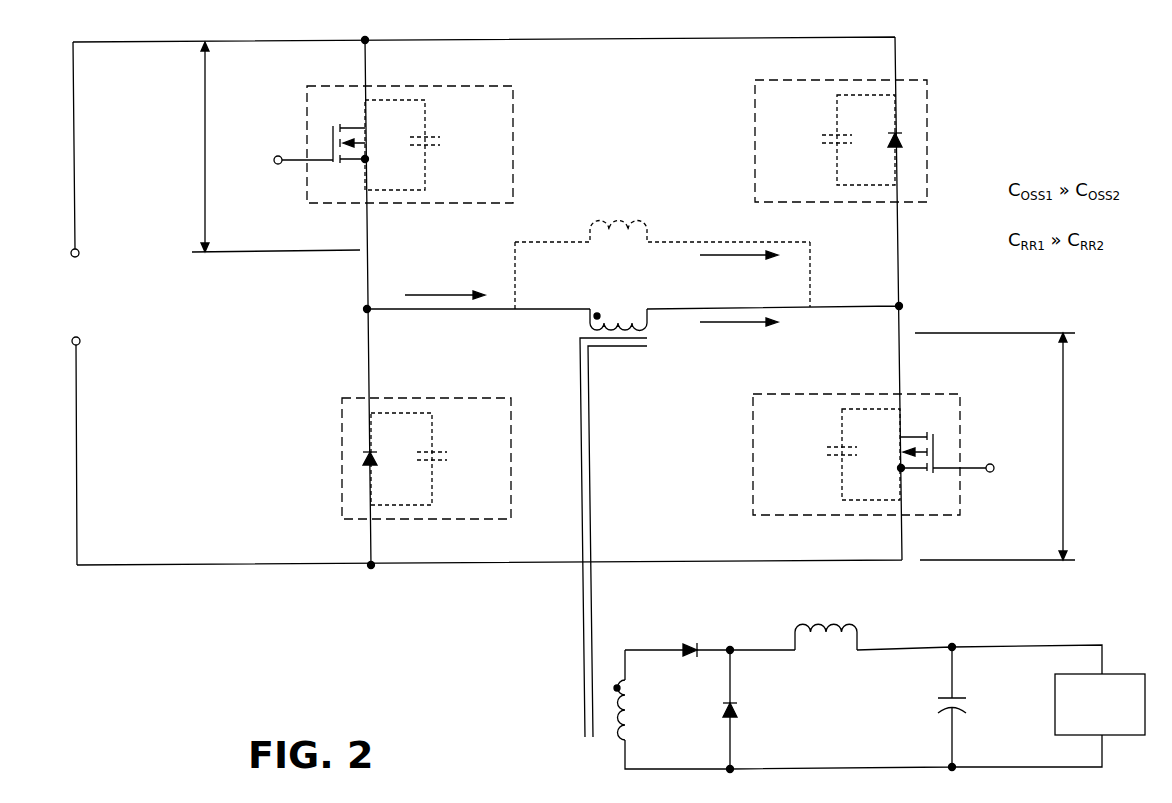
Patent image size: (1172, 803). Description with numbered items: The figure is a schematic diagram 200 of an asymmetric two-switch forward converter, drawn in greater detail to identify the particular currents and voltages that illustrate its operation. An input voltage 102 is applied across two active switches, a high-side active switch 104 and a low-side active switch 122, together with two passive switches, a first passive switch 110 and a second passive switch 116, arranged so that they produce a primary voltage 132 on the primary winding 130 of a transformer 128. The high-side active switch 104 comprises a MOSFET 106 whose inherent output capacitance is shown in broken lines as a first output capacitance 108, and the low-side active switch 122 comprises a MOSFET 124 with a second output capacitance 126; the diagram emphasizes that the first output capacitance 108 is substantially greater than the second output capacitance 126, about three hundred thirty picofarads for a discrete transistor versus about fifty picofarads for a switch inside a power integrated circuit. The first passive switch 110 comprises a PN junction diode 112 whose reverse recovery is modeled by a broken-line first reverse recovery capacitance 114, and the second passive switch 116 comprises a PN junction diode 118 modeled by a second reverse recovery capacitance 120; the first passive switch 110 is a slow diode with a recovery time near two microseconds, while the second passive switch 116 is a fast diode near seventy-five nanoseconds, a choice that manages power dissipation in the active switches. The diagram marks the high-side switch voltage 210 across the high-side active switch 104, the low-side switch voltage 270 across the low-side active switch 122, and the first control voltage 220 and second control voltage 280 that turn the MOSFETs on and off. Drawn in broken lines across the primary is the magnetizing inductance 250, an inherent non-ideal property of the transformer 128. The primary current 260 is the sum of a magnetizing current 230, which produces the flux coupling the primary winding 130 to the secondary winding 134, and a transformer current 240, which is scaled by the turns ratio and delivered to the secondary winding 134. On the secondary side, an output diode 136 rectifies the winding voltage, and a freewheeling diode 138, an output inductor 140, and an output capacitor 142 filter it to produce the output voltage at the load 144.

The input voltage V_IN 102 is at (92, 282).
The active switch Q1 104 is at (312, 86).
The MOSFET 106 is at (346, 120).
The output capacitance C_OSS1 108 is at (432, 118).
The passive switch D1 110 is at (923, 74).
The PN junction diode 112 is at (882, 150).
The reverse recovery capacitance C_RR1 114 is at (836, 122).
The passive switch D2 116 is at (340, 396).
The PN junction diode 118 is at (380, 460).
The reverse recovery capacitance C_RR2 120 is at (440, 436).
The active switch Q2 122 is at (956, 384).
The MOSFET 124 is at (930, 432).
The output capacitance C_OSS2 126 is at (832, 440).
The transformer T1 128 is at (594, 420).
The primary winding 130 is at (580, 328).
The voltage V_P 132 is at (600, 284).
The secondary winding 134 is at (632, 708).
The output diode 136 is at (682, 640).
The freewheeling diode 138 is at (746, 716).
The output inductor L1 140 is at (834, 614).
The output capacitor C1 142 is at (940, 692).
The load 144 is at (1110, 668).
The schematic diagram 200 is at (331, 651).
The voltage V_Q1 210 is at (176, 146).
The control voltage V_GS1 220 is at (292, 226).
The magnetizing current I_M 230 is at (724, 264).
The transformer current I_T 240 is at (712, 332).
The magnetizing inductance L_M 250 is at (612, 216).
The primary current I_P 260 is at (426, 284).
The voltage V_Q2 270 is at (1082, 430).
The control voltage V_GS2 280 is at (986, 540).